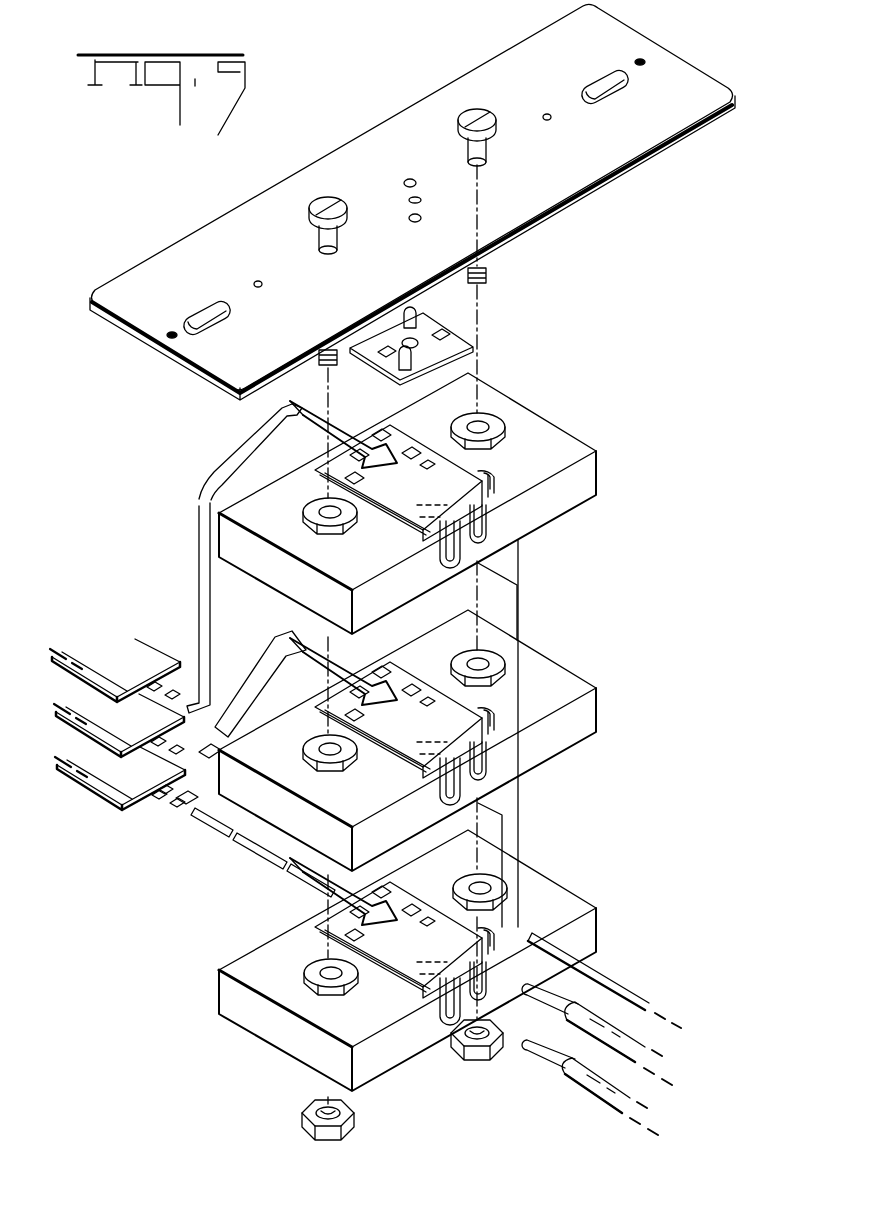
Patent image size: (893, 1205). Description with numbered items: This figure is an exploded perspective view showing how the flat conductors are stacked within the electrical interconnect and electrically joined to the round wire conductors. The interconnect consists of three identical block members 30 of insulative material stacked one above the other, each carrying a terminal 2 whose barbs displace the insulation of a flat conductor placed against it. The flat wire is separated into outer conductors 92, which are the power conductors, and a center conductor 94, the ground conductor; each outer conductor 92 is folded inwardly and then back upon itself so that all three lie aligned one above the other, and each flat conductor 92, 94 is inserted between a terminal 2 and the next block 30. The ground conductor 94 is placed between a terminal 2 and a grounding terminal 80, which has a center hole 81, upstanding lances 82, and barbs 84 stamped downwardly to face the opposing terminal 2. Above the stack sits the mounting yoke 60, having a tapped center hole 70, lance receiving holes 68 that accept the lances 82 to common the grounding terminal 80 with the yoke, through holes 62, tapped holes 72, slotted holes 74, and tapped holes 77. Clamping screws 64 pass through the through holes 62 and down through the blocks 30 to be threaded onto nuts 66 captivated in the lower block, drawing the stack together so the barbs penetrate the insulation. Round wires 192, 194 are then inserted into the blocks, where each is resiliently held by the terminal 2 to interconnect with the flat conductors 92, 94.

The terminal 2 is at (478, 473).
The block member 30 is at (430, 756).
The mounting yoke 60 is at (193, 248).
The through holes 62 is at (336, 254).
The clamping screws 64 is at (335, 207).
The nuts 66 is at (300, 1105).
The lance receiving holes 68 is at (410, 178).
The tapped center hole 70 is at (421, 200).
The tapped holes 72 is at (261, 286).
The slotted holes 74 is at (212, 300).
The tapped holes 77 is at (168, 338).
The grounding terminal 80 is at (452, 347).
The center hole 81 is at (404, 342).
The lances 82 is at (414, 318).
The barbs 84 is at (446, 335).
The outer conductors 92 is at (92, 710).
The center conductor 94 is at (128, 638).
The round wire 192 is at (580, 1020).
The round wire 194 is at (606, 985).